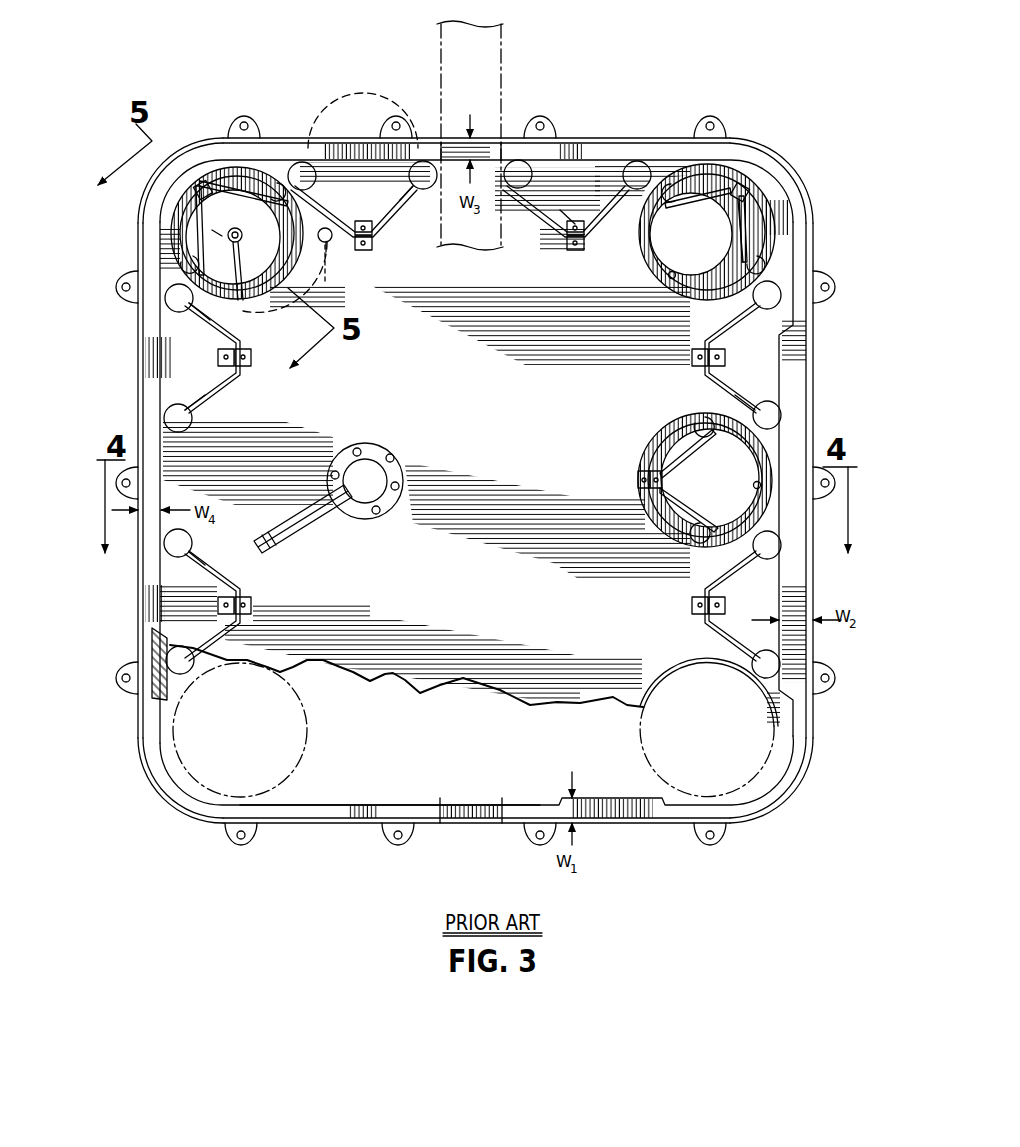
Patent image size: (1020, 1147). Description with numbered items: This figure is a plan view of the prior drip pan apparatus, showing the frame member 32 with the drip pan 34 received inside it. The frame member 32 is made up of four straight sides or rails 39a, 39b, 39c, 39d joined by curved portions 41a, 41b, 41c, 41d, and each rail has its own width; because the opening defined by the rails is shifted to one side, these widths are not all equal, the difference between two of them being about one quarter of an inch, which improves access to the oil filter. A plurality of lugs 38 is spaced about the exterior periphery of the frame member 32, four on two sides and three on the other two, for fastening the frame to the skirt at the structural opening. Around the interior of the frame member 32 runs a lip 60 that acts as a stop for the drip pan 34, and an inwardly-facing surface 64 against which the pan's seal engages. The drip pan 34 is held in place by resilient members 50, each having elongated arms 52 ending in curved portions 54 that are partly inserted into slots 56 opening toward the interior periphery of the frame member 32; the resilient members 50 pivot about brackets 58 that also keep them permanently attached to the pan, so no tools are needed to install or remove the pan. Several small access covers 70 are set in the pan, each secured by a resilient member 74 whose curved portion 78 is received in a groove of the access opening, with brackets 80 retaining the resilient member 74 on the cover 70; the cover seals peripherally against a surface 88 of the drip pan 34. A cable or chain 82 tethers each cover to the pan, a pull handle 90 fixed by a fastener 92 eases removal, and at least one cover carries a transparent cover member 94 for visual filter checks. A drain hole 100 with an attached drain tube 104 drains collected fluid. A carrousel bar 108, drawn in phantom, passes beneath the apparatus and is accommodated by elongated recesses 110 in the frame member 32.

The frame member 32 is at (514, 797).
The drip pan 34 is at (387, 681).
The lugs 38 is at (722, 128).
The rail 39a is at (790, 373).
The rail 39b is at (607, 152).
The rail 39c is at (164, 477).
The rail 39d is at (307, 813).
The curved portion 41a is at (782, 163).
The curved portion 41b is at (162, 158).
The curved portion 41c is at (172, 812).
The curved portion 41d is at (791, 800).
The resilient members 50 is at (388, 216).
The elongated arms 52 is at (557, 222).
The curved portions 54 is at (412, 190).
The slots 56 is at (330, 118).
The brackets 58 is at (366, 252).
The lip 60 is at (262, 793).
The inwardly-facing surface 64 is at (313, 803).
The access cover 70 is at (252, 176).
The resilient member 74 is at (698, 186).
The curved portion 78 is at (297, 195).
The brackets 80 is at (640, 474).
The cable or chain 82 is at (297, 290).
The surface 88 is at (240, 302).
The pull handle 90 is at (325, 245).
The fastener 92 is at (670, 279).
The transparent cover member 94 is at (216, 233).
The drain hole 100 is at (348, 522).
The drain tube 104 is at (304, 530).
The carrousel bar 108 is at (503, 42).
The elongated recesses 110 is at (495, 143).